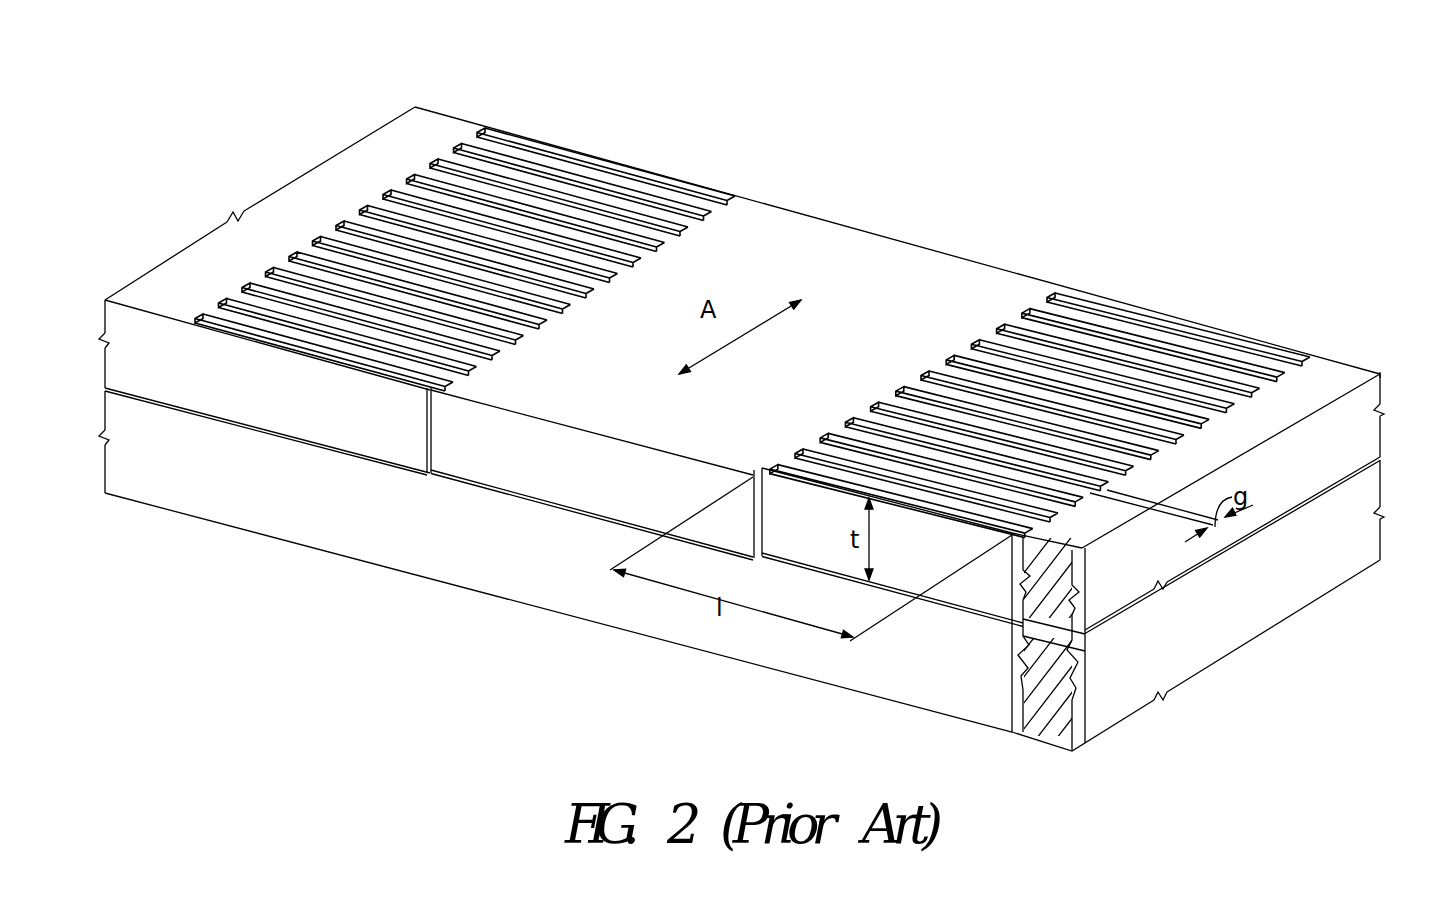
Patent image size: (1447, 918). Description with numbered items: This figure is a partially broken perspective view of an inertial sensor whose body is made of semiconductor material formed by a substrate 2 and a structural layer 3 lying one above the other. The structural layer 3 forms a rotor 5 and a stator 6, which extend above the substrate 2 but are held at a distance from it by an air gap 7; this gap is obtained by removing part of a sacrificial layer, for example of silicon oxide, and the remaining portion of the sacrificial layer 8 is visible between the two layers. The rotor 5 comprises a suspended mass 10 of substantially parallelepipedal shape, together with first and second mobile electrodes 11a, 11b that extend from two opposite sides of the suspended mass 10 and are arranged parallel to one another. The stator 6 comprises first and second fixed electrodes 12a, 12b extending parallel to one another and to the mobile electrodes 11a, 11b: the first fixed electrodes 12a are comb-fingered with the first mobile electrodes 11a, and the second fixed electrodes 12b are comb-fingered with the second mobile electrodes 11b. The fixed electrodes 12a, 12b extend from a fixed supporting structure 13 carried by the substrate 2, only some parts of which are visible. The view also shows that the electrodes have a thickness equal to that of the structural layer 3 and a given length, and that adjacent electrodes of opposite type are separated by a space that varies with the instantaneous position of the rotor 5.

The substrate 2 is at (150, 465).
The structural layer 3 is at (160, 333).
The rotor 5 is at (799, 247).
The stator 6 is at (1333, 373).
The air gap 7 is at (100, 392).
The remaining portion of the sacrificial layer 8 is at (1383, 457).
The suspended mass 10 is at (932, 256).
The first mobile electrodes 11a is at (1087, 340).
The second mobile electrodes 11b is at (690, 208).
The first fixed electrodes 12a is at (1190, 377).
The second fixed electrodes 12b is at (523, 173).
The fixed supporting structure 13 is at (1363, 372).